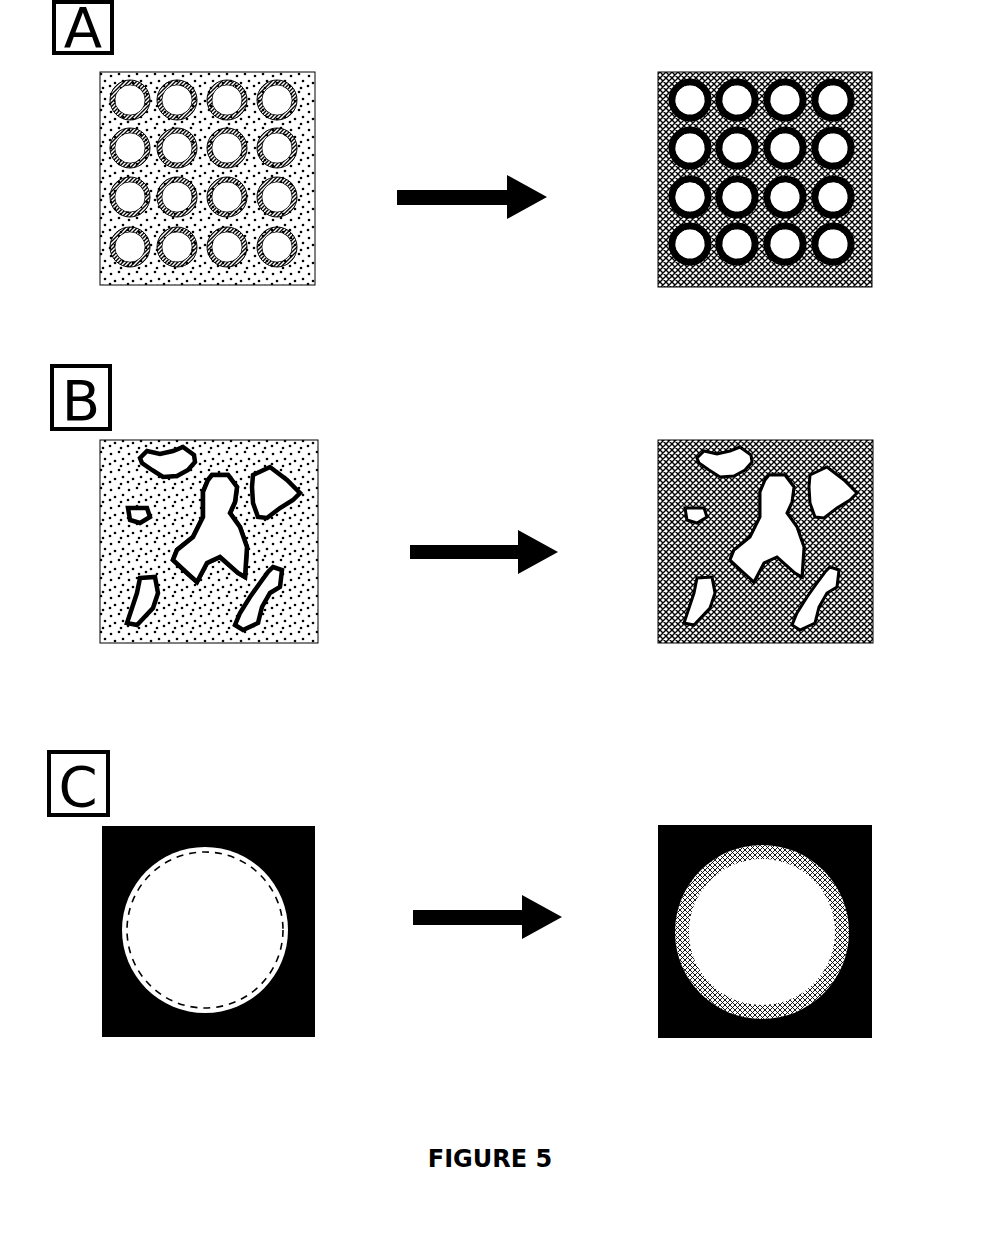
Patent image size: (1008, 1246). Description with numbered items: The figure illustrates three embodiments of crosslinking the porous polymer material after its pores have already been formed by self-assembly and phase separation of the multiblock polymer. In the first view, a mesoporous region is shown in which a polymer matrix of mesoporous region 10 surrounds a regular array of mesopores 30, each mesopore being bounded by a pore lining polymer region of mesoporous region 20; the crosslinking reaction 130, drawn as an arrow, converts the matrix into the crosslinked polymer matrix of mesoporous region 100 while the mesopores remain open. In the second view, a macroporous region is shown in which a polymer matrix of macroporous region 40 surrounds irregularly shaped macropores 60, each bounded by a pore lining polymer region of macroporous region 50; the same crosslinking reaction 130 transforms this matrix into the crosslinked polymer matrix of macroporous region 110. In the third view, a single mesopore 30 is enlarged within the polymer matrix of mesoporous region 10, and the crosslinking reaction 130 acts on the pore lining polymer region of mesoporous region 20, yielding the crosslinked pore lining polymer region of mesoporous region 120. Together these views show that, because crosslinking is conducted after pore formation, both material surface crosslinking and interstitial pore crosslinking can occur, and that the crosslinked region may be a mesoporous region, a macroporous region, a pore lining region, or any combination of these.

In FIG. 5A, the polymer matrix of mesoporous region 10 is at (307, 113).
In FIG. 5C, the polymer matrix of mesoporous region 10 is at (282, 853).
In FIG. 5A, the pore lining polymer region of mesoporous region 20 is at (293, 202).
In FIG. 5C, the pore lining polymer region of mesoporous region 20 is at (288, 927).
In FIG. 5A, the mesopore 30 is at (278, 250).
In FIG. 5C, the mesopore 30 is at (203, 963).
In FIG. 5B, the polymer matrix of macroporous region 40 is at (315, 465).
In FIG. 5B, the pore lining polymer region of macroporous region 50 is at (257, 515).
In FIG. 5B, the macropore 60 is at (222, 543).
In FIG. 5A, the crosslinked polymer matrix of mesoporous region 100 is at (670, 77).
In FIG. 5B, the crosslinked polymer matrix of macroporous region 110 is at (660, 447).
In FIG. 5C, the crosslinked pore lining polymer region of mesoporous region 120 is at (682, 953).
In FIG. 5A, the crosslinking reaction 130 is at (472, 186).
In FIG. 5B, the crosslinking reaction 130 is at (484, 564).
In FIG. 5C, the crosslinking reaction 130 is at (487, 931).